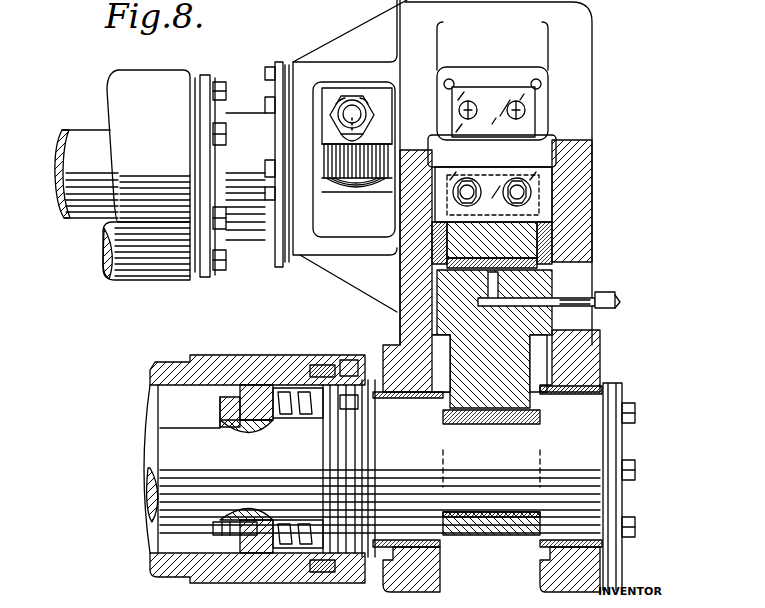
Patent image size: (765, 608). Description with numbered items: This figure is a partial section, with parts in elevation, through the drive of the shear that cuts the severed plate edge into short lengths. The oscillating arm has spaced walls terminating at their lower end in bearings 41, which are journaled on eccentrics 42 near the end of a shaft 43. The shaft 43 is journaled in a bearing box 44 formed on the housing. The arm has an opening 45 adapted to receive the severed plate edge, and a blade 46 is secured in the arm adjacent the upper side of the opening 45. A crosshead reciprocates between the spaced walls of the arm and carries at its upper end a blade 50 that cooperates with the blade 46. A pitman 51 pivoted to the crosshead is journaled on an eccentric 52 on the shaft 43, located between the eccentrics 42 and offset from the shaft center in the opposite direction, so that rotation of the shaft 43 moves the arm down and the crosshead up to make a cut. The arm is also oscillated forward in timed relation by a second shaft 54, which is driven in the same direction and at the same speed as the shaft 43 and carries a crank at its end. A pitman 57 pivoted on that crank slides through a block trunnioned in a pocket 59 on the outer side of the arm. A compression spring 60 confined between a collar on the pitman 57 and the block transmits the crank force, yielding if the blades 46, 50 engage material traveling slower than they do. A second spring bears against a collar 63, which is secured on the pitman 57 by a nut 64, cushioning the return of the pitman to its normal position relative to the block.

The bearings 41 is at (568, 364).
The eccentrics 42 is at (393, 408).
The shaft 43 is at (175, 432).
The bearing box 44 is at (212, 368).
The opening 45 is at (530, 148).
The blade 46 is at (530, 108).
The blade 50 is at (540, 184).
The pitman 51 is at (565, 345).
The eccentric 52 is at (497, 490).
The shaft 54 is at (80, 210).
The pitman 57 is at (354, 100).
The pocket 59 is at (302, 238).
The compression spring 60 is at (356, 192).
The collar 63 is at (380, 138).
The nut 64 is at (372, 116).